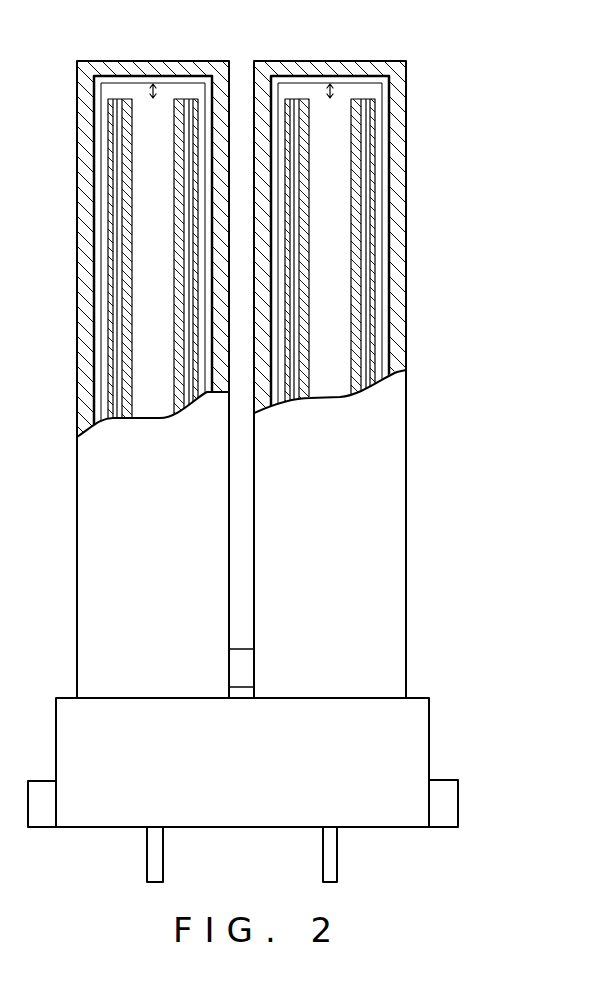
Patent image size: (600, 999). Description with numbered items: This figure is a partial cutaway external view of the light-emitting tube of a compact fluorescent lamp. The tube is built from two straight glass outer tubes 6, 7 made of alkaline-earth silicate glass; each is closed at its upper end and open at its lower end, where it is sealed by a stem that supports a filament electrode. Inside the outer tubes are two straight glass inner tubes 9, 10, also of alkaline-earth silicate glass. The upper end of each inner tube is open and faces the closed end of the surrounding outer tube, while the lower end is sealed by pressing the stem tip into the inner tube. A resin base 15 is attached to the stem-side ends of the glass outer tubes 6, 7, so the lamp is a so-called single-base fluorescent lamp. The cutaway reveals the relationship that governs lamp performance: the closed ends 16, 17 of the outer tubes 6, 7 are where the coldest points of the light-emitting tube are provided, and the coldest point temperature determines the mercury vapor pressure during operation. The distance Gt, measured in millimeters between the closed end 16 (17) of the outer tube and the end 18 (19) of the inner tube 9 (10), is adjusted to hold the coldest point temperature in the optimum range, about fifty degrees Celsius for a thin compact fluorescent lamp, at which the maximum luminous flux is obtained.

The glass outer tube 6 is at (103, 465).
The glass outer tube 7 is at (203, 452).
The glass inner tube 9 is at (120, 168).
The glass inner tube 10 is at (368, 269).
The resin base 15 is at (410, 743).
The closed end of glass outer tube 16 is at (124, 88).
The closed end of glass outer tube 17 is at (330, 227).
The end of glass inner tube 18 is at (117, 123).
The end of glass inner tube 19 is at (186, 112).
The distance between outer tube end and inner tube end Gt is at (154, 88).